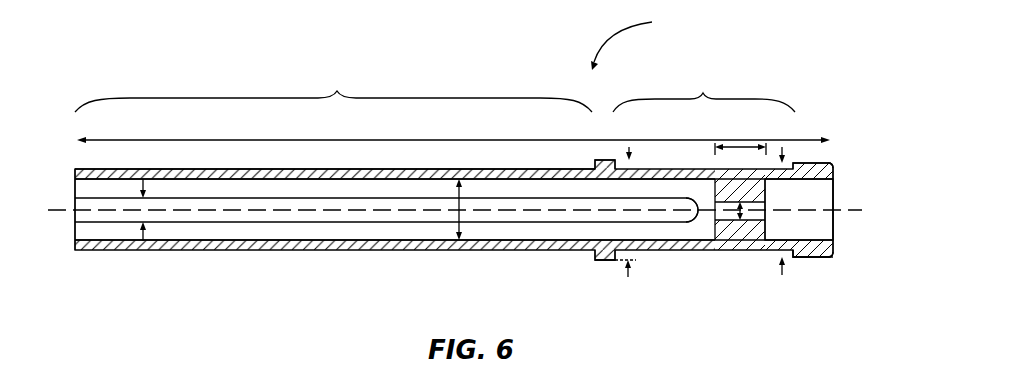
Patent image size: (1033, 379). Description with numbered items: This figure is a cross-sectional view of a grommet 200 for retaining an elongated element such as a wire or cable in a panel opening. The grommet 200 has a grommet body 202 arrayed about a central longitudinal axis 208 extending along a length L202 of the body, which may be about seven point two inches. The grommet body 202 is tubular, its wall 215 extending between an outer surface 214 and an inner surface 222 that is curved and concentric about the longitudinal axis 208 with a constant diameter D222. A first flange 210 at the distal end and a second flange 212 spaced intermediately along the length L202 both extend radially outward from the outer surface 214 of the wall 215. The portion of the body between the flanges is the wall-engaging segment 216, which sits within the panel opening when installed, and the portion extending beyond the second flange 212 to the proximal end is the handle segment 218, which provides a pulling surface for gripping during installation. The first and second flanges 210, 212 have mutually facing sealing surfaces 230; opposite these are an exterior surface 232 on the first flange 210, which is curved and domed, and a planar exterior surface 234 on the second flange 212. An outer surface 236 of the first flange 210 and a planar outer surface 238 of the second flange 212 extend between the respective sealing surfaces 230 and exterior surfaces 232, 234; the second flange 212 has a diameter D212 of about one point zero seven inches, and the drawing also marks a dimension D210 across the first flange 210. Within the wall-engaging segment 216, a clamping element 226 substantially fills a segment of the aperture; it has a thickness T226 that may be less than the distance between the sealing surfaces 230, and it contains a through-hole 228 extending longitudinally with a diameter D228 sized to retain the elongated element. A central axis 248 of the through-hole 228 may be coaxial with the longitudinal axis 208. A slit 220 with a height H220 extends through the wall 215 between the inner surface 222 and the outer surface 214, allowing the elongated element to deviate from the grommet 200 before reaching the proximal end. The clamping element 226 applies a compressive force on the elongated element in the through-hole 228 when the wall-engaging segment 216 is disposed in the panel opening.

The grommet 200 is at (643, 41).
The grommet body 202 is at (218, 252).
The longitudinal axis 208 is at (790, 222).
The first flange 210 is at (807, 161).
The second flange 212 is at (598, 163).
The outer surface 214 is at (325, 170).
The wall 215 is at (73, 252).
The wall-engaging segment 216 is at (704, 92).
The handle segment 218 is at (333, 92).
The slit 220 is at (262, 192).
The inner surface 222 is at (298, 184).
The clamping element 226 is at (768, 191).
The through-hole 228 is at (780, 205).
The sealing surfaces 230 is at (631, 166).
The exterior surface 232 is at (835, 251).
The exterior surface 234 is at (594, 254).
The outer surface 236 is at (800, 258).
The outer surface 238 is at (601, 261).
The central axis 248 is at (698, 212).
The length of grommet body L202 is at (490, 138).
The height of slit H220 is at (150, 180).
The diameter of inner surface D222 is at (462, 193).
The thickness of clamping element T226 is at (740, 145).
The diameter of second flange D212 is at (628, 278).
The diameter of through-hole D228 is at (739, 218).
The diameter of end cap D210 is at (781, 270).